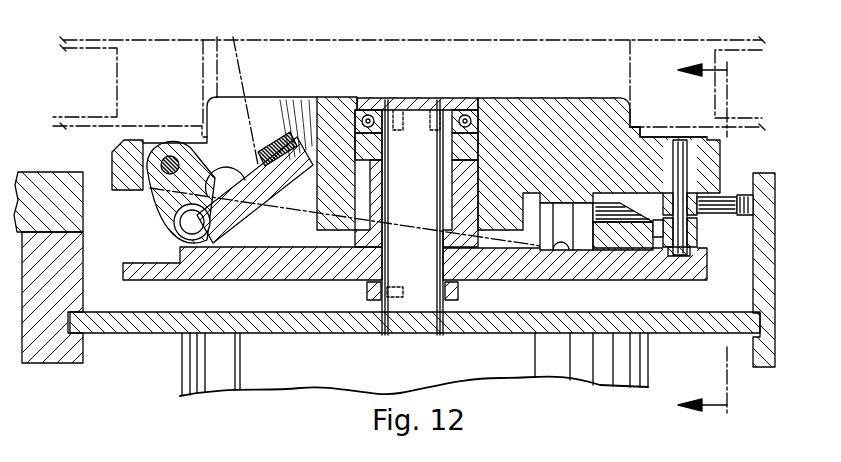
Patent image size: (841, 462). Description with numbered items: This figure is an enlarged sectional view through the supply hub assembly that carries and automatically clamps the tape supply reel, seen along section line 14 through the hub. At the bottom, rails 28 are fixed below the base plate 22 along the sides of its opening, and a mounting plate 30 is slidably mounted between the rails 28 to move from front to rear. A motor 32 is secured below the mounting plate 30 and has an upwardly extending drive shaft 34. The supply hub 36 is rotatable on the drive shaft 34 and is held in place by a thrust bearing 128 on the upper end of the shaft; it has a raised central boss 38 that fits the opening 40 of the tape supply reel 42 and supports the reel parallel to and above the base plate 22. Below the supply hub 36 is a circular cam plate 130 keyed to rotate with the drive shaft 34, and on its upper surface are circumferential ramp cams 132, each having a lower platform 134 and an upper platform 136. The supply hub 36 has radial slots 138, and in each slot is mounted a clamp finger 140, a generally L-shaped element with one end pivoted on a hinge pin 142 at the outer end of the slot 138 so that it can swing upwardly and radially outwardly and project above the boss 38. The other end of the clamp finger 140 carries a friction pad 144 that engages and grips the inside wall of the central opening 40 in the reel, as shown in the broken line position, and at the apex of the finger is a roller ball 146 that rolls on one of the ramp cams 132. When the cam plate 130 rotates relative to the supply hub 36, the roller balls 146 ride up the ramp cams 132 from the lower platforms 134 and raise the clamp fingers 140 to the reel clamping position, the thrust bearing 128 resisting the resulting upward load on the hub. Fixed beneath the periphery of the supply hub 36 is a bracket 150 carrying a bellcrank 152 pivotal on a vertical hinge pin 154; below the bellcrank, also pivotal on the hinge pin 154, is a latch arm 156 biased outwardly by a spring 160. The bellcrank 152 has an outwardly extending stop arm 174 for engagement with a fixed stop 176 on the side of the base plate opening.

The section line 14- 14 is at (686, 240).
The base plate 22 is at (60, 178).
The rails 28 is at (58, 358).
The mounting plate 30 is at (155, 320).
The motor 32 is at (200, 362).
The drive shaft 34 is at (420, 320).
The supply hub 36 is at (657, 147).
The raised central boss 38 is at (598, 103).
The opening 40 is at (628, 58).
The tape supply reel 42 is at (688, 40).
The thrust bearing 128 is at (463, 110).
The cam plate 130 is at (280, 270).
The ramp cams 132 is at (617, 217).
The lower platform 134 is at (548, 270).
The upper platform 136 is at (553, 203).
The radial slots 138 is at (316, 118).
The clamp finger 140 is at (272, 180).
The hinge pin 142 is at (168, 157).
The friction pad 144 is at (215, 37).
The roller ball 146 is at (173, 220).
The bracket 150 is at (663, 240).
The bellcrank 152 is at (700, 218).
The hinge pin 154 is at (681, 250).
The latch arm 156 is at (697, 236).
The spring 160 is at (657, 220).
The stop arm 174 is at (707, 193).
The fixed stop 176 is at (740, 182).